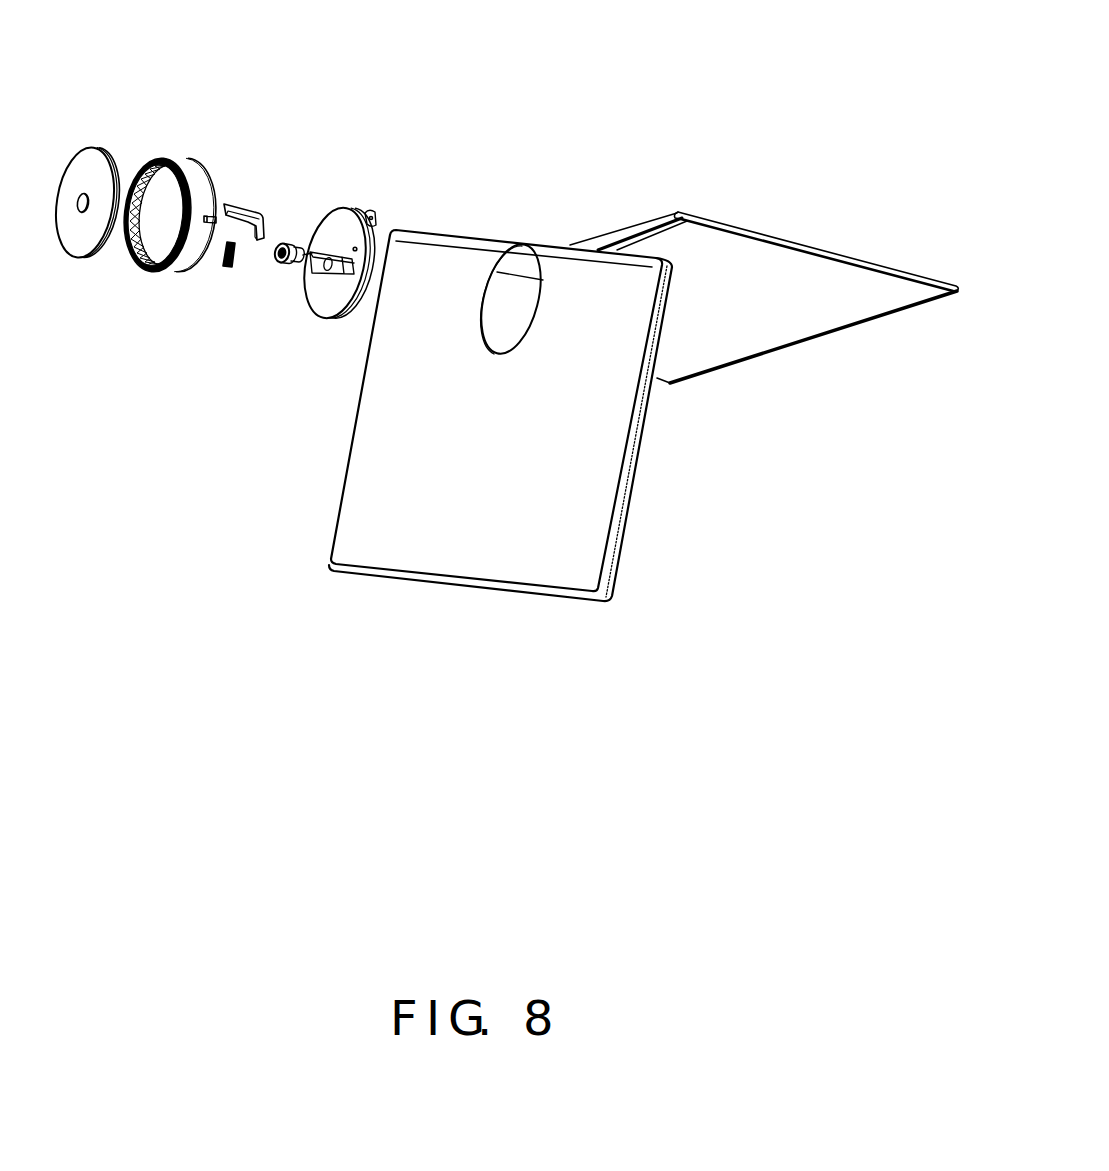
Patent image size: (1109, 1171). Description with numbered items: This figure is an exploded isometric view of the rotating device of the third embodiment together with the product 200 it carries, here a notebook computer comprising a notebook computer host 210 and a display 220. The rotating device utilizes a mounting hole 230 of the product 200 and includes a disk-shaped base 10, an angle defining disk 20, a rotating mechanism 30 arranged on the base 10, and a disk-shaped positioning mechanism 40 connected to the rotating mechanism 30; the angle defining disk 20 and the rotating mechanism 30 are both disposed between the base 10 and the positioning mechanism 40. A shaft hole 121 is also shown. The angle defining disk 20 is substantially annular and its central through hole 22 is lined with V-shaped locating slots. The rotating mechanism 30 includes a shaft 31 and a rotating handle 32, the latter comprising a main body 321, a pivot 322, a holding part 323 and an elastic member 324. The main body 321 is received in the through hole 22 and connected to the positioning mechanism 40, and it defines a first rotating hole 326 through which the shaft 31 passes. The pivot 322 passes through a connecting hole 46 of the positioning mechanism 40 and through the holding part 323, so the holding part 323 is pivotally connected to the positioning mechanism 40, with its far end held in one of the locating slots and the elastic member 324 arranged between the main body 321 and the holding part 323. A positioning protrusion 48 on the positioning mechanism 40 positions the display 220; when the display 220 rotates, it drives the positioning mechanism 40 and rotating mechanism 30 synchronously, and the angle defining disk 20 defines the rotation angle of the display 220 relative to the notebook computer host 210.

The base 10 is at (97, 165).
The shaft hole 121 is at (81, 198).
The angle defining disk 20 is at (185, 160).
The through hole 22 is at (169, 183).
The rotating mechanism 30 is at (332, 425).
The shaft 31 is at (364, 278).
The rotating handle 32 is at (313, 353).
The main body 321 is at (314, 266).
The pivot 322 is at (197, 216).
The holding part 323 is at (238, 220).
The elastic member 324 is at (222, 257).
The first rotating hole 326 is at (330, 250).
The positioning mechanism 40 is at (357, 222).
The connecting hole 46 is at (356, 248).
The positioning protrusion 48 is at (370, 217).
The product 200 is at (796, 411).
The notebook computer host 210 is at (600, 428).
The display 220 is at (735, 327).
The mounting hole 230 is at (522, 263).